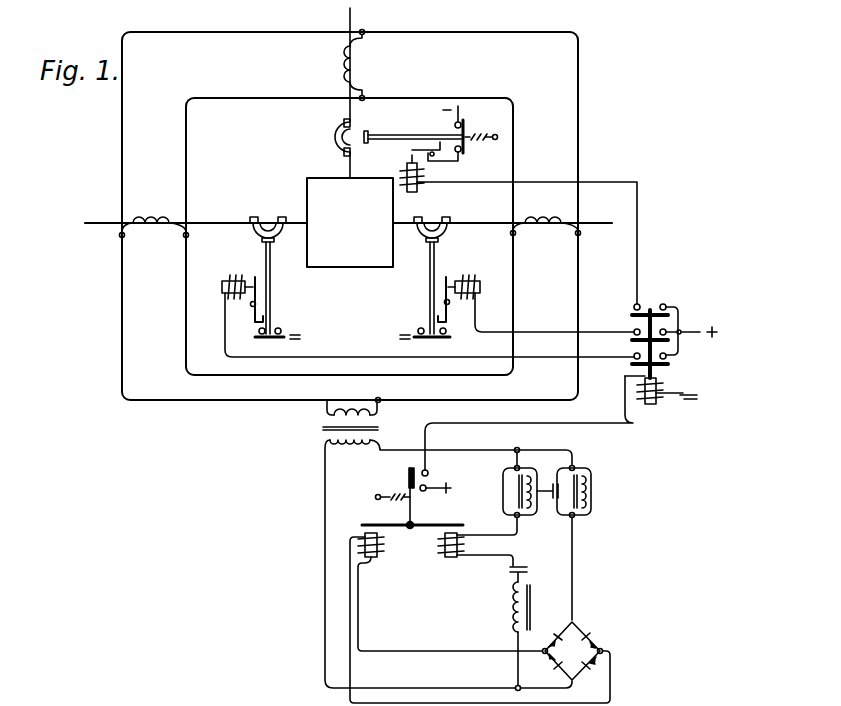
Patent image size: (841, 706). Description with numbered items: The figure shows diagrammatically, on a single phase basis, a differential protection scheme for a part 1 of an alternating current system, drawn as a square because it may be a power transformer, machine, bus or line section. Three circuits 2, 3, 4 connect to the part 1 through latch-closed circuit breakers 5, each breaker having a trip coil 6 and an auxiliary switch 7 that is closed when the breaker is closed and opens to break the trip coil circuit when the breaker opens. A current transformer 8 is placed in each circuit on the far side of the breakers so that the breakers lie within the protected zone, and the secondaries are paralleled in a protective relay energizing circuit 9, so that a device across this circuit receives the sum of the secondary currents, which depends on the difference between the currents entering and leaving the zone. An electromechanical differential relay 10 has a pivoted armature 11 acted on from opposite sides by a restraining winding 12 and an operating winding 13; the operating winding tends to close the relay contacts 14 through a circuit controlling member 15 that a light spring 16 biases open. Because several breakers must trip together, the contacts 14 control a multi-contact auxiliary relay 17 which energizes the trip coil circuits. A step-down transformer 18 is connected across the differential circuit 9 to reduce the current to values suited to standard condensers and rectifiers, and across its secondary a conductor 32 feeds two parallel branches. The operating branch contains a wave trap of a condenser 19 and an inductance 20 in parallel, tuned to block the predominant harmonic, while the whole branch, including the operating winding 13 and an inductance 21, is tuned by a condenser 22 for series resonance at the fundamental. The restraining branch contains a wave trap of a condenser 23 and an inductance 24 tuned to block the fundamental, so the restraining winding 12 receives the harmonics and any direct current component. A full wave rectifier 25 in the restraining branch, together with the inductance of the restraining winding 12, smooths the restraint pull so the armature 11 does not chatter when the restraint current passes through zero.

The part to be protected 1 is at (306, 182).
The circuit 2 is at (347, 110).
The circuit 3 is at (470, 222).
The circuit 4 is at (207, 221).
The latch-closed circuit breaker 5 is at (395, 134).
The trip coil 6 is at (420, 178).
The auxiliary switch 7 is at (468, 127).
The current transformer 8 is at (343, 67).
The protective relay energizing circuit 9 is at (221, 378).
The differential relay 10 is at (480, 583).
The pivoted armature 11 is at (435, 523).
The restraining winding 12 is at (377, 559).
The operating winding 13 is at (463, 545).
The relay contacts 14 is at (428, 479).
The circuit controlling member 15 is at (408, 478).
The light spring 16 is at (392, 499).
The multi-contact auxiliary relay 17 is at (659, 383).
The step-down transformer 18 is at (323, 428).
The condenser 19 is at (515, 485).
The inductance 20 is at (541, 483).
The inductance 21 is at (511, 607).
The condenser 22 is at (509, 571).
The condenser 23 is at (556, 500).
The inductance 24 is at (592, 490).
The full wave rectifier 25 is at (559, 656).
The conductor 32 is at (384, 449).